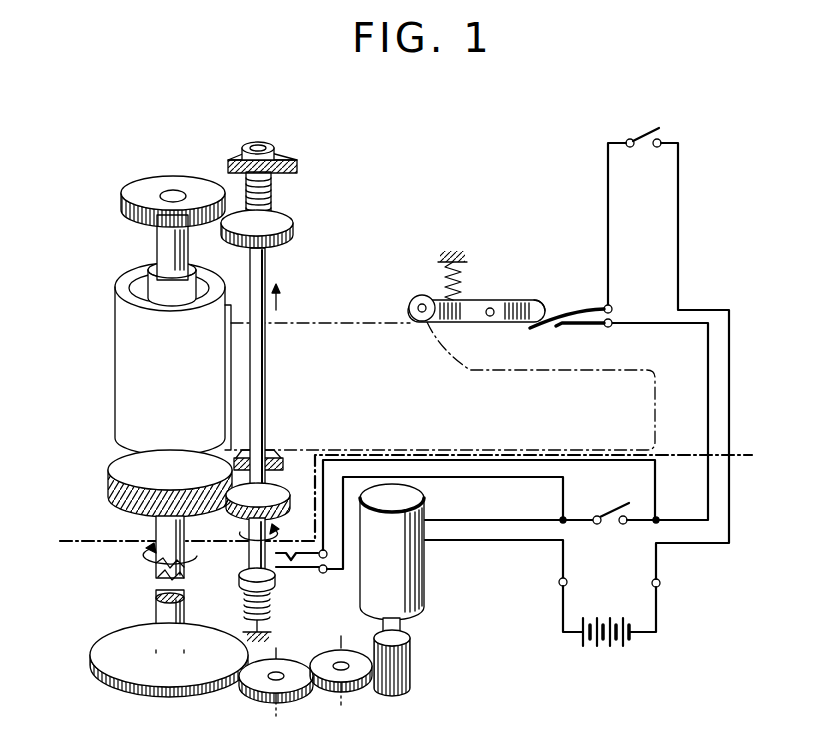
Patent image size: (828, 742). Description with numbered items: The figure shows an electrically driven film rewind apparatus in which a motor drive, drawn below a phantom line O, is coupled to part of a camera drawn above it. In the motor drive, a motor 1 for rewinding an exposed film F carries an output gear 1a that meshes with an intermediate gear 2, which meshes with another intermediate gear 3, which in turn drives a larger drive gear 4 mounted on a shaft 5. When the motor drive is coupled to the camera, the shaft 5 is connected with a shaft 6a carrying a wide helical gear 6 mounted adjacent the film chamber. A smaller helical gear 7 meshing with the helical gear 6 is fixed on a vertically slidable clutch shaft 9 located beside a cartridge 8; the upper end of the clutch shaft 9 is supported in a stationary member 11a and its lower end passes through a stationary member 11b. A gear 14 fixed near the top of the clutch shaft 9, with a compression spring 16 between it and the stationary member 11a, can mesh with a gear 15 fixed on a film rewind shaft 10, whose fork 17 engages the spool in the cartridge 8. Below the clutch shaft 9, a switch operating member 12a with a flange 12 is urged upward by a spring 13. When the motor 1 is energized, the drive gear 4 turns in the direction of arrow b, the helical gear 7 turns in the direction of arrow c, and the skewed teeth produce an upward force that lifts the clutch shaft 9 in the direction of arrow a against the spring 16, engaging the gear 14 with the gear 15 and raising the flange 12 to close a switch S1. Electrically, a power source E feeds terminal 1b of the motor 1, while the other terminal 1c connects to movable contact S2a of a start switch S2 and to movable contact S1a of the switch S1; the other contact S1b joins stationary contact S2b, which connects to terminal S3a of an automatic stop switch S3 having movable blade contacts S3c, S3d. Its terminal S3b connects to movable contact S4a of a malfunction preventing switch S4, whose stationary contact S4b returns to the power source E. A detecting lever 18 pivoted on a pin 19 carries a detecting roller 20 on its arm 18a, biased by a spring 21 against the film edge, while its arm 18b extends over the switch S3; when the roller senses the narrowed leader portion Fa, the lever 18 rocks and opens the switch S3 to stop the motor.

The motor 1 is at (415, 597).
The output gear 1a is at (406, 688).
The power supply terminal 1b is at (428, 541).
The power supply terminal 1c is at (428, 521).
The intermediate gear 2 is at (344, 684).
The intermediate gear 3 is at (298, 686).
The drive gear 4 is at (201, 680).
The shaft 5 is at (157, 600).
The helical gear 6 is at (116, 456).
The shaft 6a is at (160, 528).
The helical gear 7 is at (280, 492).
The cartridge 8 is at (115, 388).
The clutch shaft 9 is at (262, 386).
The film rewind shaft 10 is at (158, 247).
The stationary member 11a is at (278, 158).
The stationary member 11b is at (268, 456).
The flange 12 is at (240, 578).
The switch operating member 12a is at (250, 556).
The spring 13 is at (245, 606).
The gear 14 is at (286, 222).
The gear 15 is at (170, 182).
The compression spring 16 is at (270, 205).
The fork 17 is at (150, 289).
The detecting lever 18 is at (475, 300).
The arm 18a is at (425, 322).
The arm 18b is at (542, 303).
The pin 19 is at (488, 316).
The detecting roller 20 is at (416, 299).
The spring 21 is at (441, 266).
The film F is at (333, 323).
The leader portion Fa is at (540, 371).
The phantom line O is at (389, 512).
The arrow a is at (282, 297).
The arrow b is at (150, 560).
The arrow c is at (243, 532).
The power source E is at (606, 648).
The switch S1 is at (297, 566).
The movable contact S1a is at (325, 573).
The movable contact S1b is at (319, 550).
The start switch S2 is at (609, 514).
The movable contact S2a is at (597, 524).
The stationary contact S2b is at (623, 524).
The automatic stop switch S3 is at (577, 318).
The terminal S3a is at (612, 321).
The terminal S3b is at (611, 306).
The movable blade contact S3c is at (590, 327).
The movable blade contact S3d is at (583, 309).
The malfunction preventing switch S4 is at (640, 137).
The movable contact S4a is at (626, 141).
The stationary contact S4b is at (655, 147).